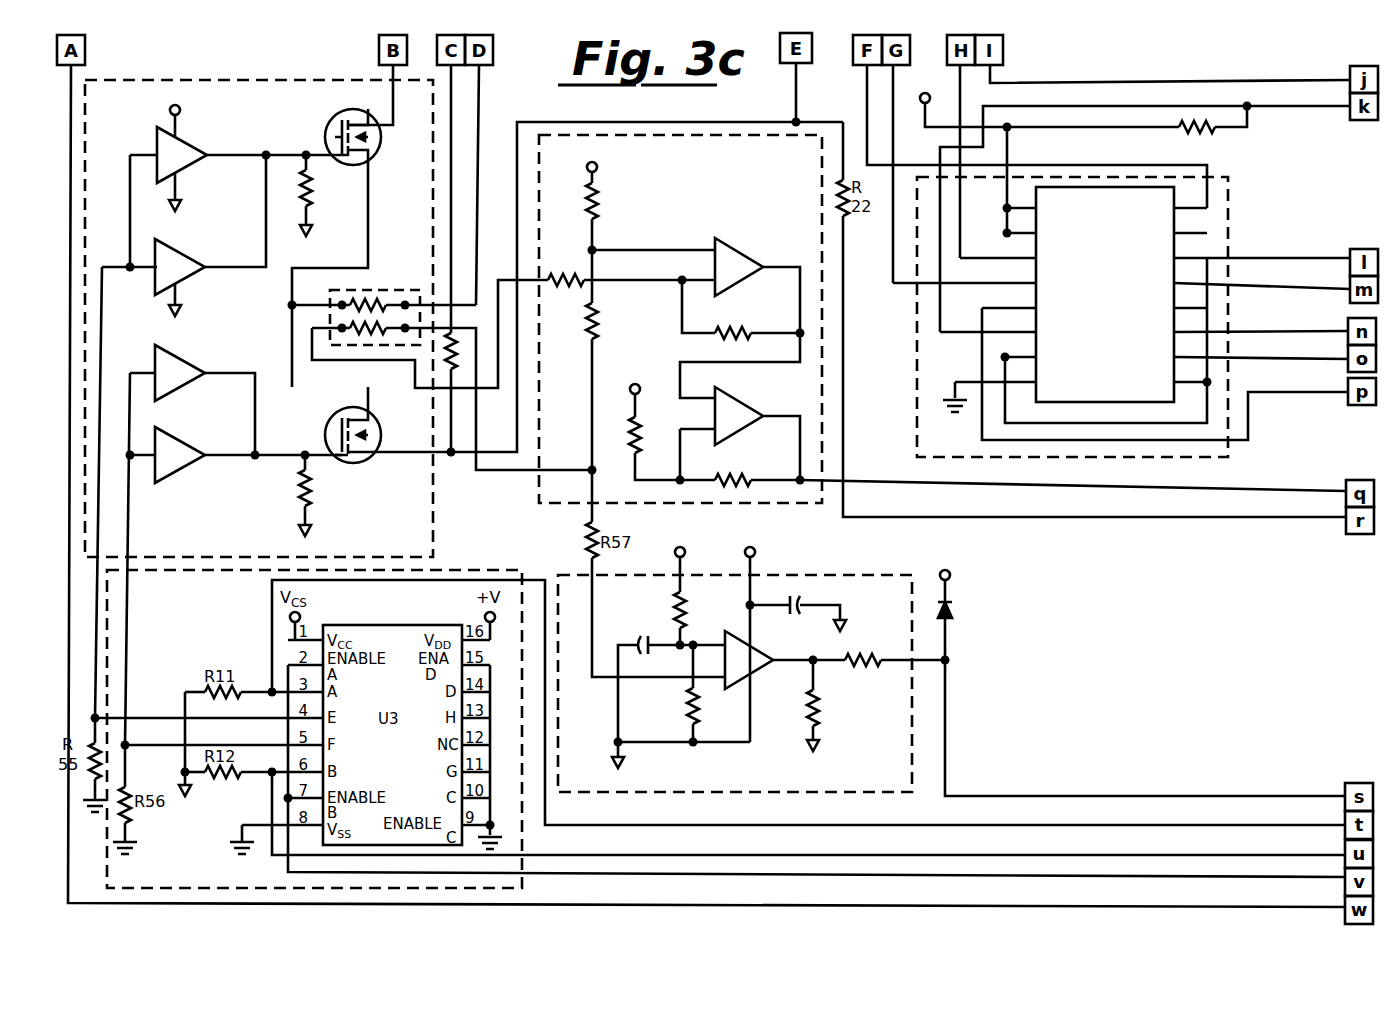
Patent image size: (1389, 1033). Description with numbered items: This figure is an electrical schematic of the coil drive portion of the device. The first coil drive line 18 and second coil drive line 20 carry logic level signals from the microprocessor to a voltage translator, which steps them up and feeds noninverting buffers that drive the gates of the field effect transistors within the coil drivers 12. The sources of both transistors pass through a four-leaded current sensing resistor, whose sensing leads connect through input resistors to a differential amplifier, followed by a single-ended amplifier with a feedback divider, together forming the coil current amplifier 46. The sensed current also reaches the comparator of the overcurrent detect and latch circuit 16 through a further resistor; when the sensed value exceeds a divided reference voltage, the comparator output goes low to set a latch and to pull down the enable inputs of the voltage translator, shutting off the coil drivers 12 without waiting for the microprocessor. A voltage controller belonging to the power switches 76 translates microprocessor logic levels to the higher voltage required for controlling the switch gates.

The coil drivers 12 is at (433, 518).
The overcurrent detect and latch circuit 16 is at (855, 575).
The first coil drive line 18 is at (1173, 826).
The second coil drive line 20 is at (1175, 858).
The coil current amplifier 46 is at (565, 503).
The power switches 76 is at (1232, 207).